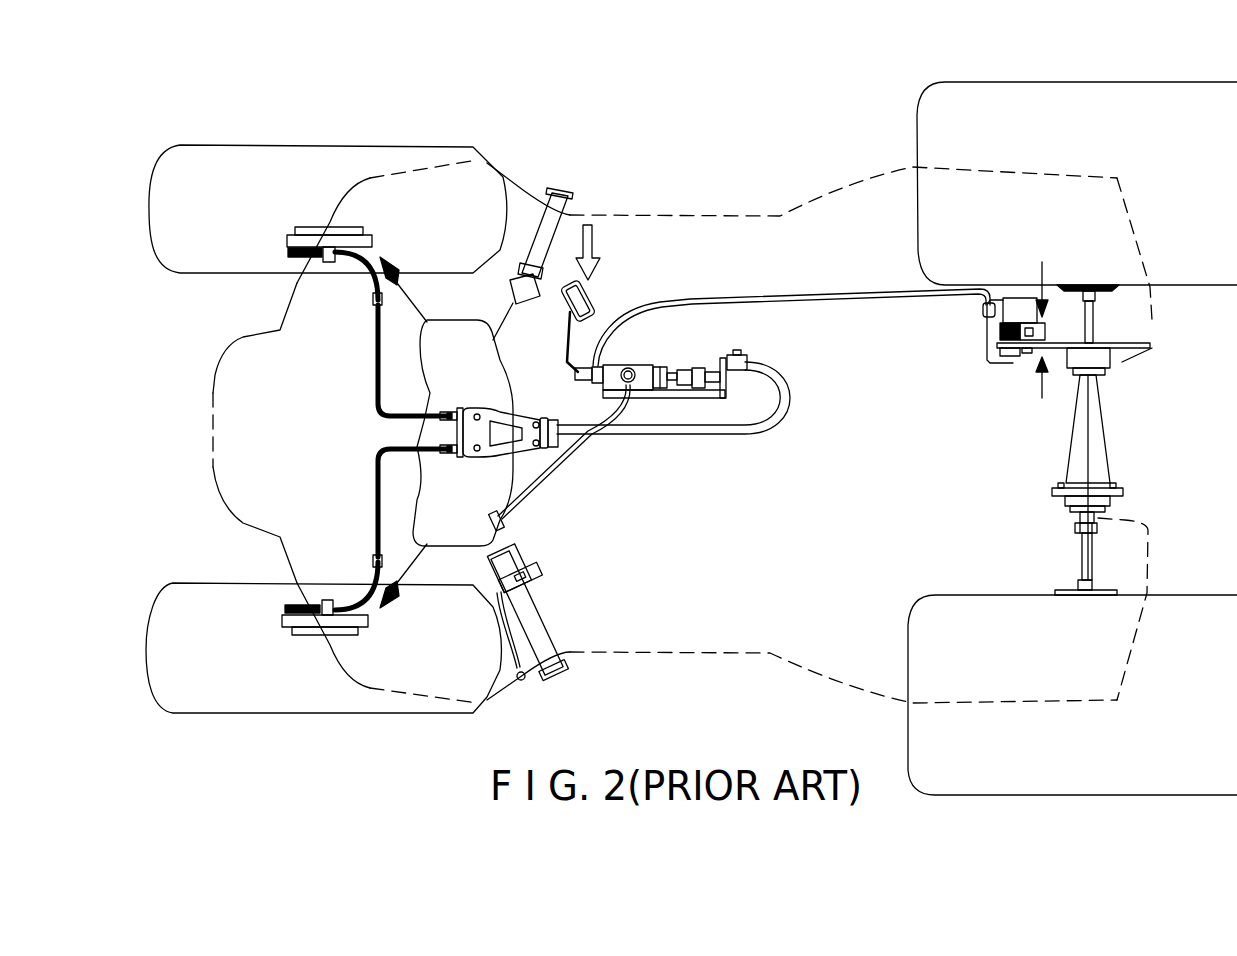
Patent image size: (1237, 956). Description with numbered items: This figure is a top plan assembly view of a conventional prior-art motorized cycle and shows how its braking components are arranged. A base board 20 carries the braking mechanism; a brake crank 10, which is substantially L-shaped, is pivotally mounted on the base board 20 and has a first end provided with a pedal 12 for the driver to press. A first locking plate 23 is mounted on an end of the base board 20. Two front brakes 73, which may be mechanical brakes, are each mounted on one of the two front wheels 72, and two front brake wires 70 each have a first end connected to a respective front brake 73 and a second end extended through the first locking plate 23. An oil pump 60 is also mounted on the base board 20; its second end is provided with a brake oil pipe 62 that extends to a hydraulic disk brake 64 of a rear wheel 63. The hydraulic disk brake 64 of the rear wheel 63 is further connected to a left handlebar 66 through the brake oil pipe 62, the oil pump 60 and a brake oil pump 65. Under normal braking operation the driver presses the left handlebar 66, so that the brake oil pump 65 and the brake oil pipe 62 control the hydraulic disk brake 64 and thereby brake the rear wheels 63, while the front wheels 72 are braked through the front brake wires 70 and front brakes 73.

The brake crank 10 is at (563, 347).
The pedal 12 is at (595, 293).
The base board 20 is at (675, 398).
The first locking plate 23 is at (732, 392).
The oil pump 60 is at (645, 366).
The brake oil pipe 62 is at (920, 298).
The rear wheel 63 is at (927, 122).
The hydraulic disk brake 64 is at (1020, 355).
The brake oil pump 65 is at (493, 577).
The left handlebar 66 is at (517, 682).
The front brake wire 70 is at (376, 350).
The front wheel 72 is at (218, 163).
The front brake 73 is at (311, 255).